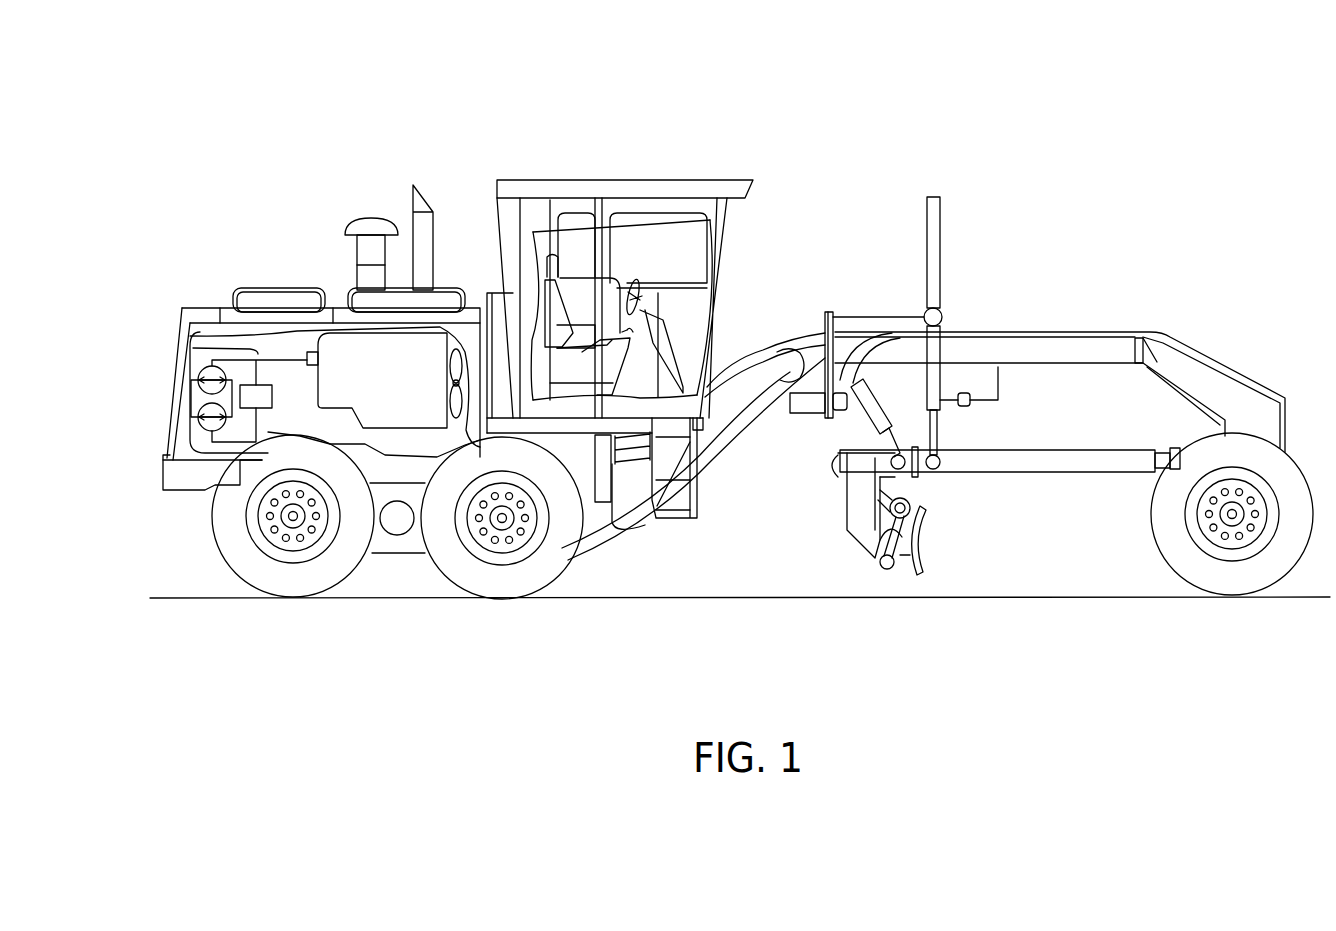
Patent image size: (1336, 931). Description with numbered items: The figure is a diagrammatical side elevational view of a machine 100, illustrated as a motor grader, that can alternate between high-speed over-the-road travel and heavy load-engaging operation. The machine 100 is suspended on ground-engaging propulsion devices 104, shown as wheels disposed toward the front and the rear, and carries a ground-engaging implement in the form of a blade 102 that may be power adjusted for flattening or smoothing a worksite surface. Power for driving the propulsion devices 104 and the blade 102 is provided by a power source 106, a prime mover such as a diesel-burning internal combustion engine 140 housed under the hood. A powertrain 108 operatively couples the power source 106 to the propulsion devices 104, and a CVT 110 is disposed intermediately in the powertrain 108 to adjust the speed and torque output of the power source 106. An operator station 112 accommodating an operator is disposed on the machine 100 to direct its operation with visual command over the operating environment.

The machine 100 is at (725, 405).
The blade 102 is at (917, 536).
The propulsion devices 104 is at (498, 578).
The power source 106 is at (377, 380).
The engine 140 is at (358, 355).
The powertrain 108 is at (228, 347).
The CVT 110 is at (192, 395).
The operator station 112 is at (605, 188).